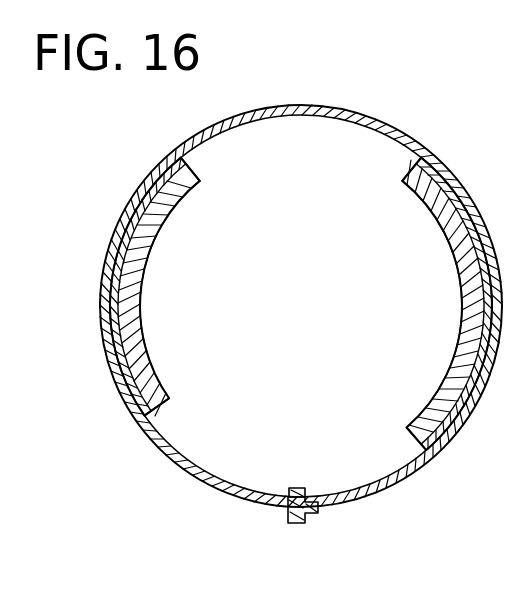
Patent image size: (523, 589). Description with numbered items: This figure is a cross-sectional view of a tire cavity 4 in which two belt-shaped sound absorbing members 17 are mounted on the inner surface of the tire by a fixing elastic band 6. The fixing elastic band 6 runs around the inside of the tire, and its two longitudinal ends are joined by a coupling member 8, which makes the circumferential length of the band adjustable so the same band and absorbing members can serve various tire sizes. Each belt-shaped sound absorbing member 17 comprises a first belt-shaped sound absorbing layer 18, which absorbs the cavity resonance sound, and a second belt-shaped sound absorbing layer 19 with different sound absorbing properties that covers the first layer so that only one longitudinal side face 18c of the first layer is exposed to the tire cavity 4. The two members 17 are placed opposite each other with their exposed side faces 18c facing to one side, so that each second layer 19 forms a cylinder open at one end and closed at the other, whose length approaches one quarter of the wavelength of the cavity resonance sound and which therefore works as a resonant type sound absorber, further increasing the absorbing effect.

The tire cavity 4 is at (314, 142).
The fixing elastic band 6 is at (392, 126).
The coupling member 8 is at (296, 525).
The belt-shaped sound absorbing member 17 is at (150, 340).
The first belt-shaped sound absorbing layer 18 is at (145, 263).
The one longitudinal side face 18c is at (195, 160).
The second belt-shaped sound absorbing layer 19 is at (158, 396).